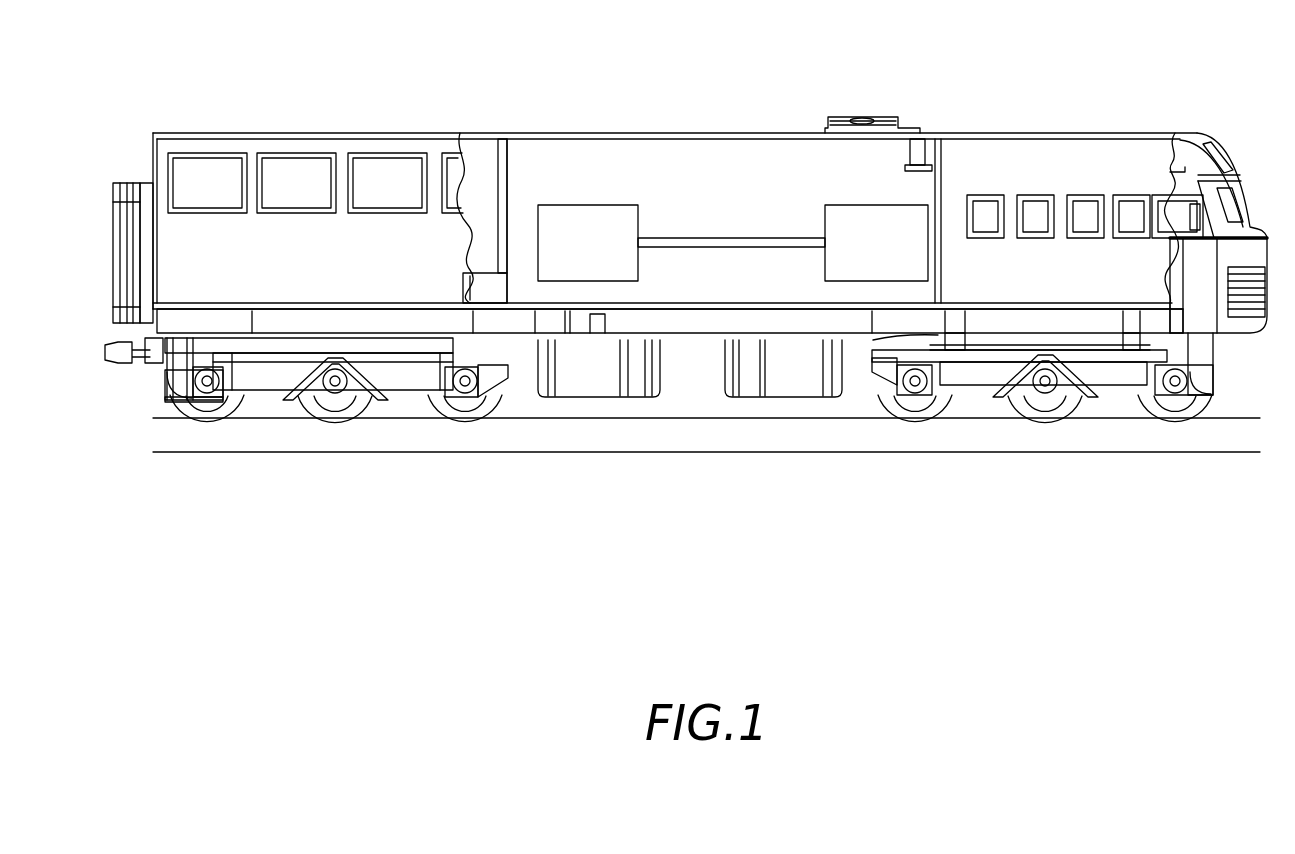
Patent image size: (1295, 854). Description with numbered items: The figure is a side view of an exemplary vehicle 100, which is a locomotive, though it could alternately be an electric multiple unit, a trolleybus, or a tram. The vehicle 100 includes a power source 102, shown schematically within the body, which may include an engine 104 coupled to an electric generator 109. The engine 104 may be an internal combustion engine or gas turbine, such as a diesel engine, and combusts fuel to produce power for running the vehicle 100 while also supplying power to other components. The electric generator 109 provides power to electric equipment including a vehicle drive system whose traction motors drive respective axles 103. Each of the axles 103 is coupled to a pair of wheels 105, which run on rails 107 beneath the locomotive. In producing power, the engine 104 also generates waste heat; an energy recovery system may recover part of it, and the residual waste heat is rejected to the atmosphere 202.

The vehicle 100 is at (160, 89).
The atmosphere 202 is at (560, 117).
The power source 102 is at (670, 180).
The electric generator 109 is at (580, 205).
The engine 104 is at (858, 205).
The axles 103 is at (340, 385).
The wheels 105 is at (325, 420).
The rails 107 is at (185, 455).